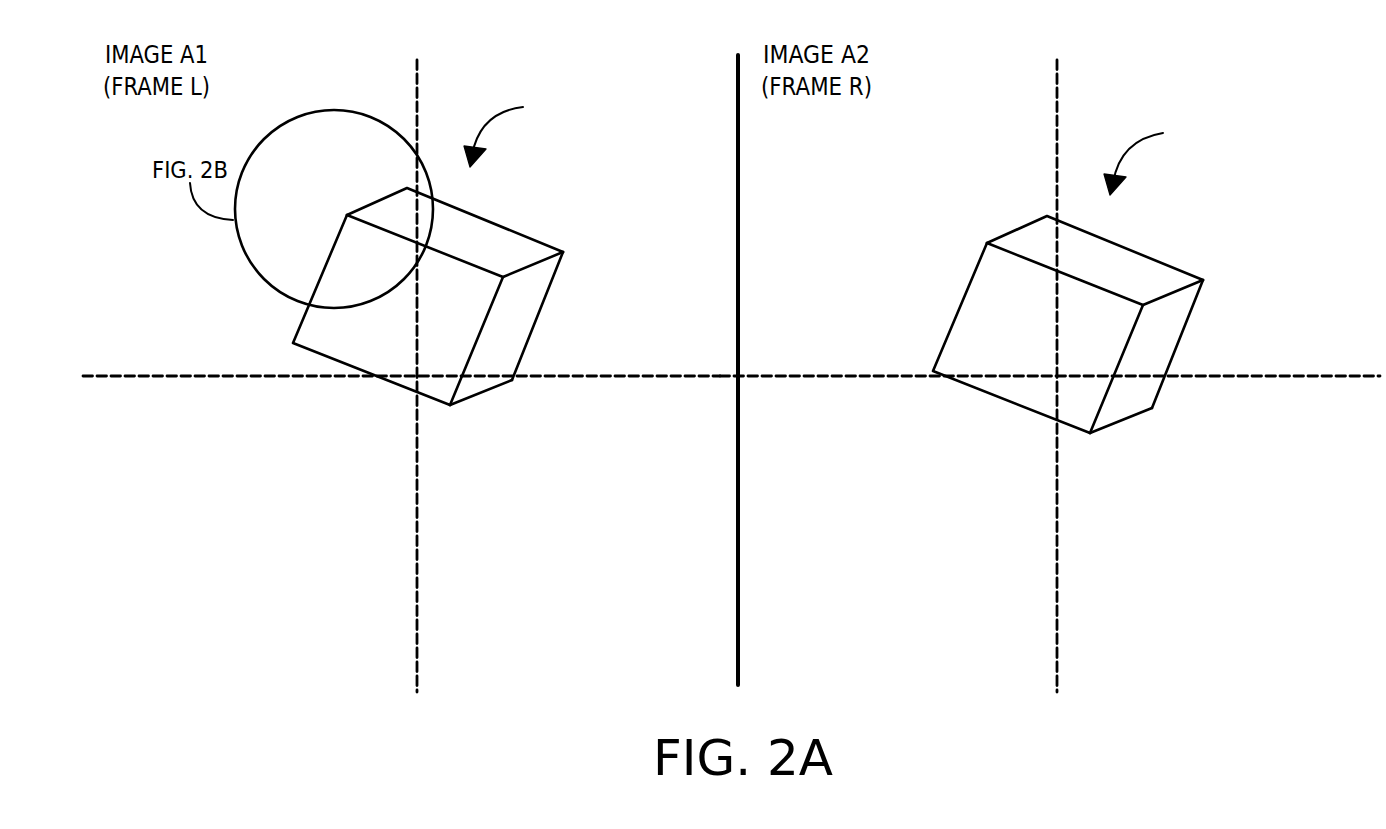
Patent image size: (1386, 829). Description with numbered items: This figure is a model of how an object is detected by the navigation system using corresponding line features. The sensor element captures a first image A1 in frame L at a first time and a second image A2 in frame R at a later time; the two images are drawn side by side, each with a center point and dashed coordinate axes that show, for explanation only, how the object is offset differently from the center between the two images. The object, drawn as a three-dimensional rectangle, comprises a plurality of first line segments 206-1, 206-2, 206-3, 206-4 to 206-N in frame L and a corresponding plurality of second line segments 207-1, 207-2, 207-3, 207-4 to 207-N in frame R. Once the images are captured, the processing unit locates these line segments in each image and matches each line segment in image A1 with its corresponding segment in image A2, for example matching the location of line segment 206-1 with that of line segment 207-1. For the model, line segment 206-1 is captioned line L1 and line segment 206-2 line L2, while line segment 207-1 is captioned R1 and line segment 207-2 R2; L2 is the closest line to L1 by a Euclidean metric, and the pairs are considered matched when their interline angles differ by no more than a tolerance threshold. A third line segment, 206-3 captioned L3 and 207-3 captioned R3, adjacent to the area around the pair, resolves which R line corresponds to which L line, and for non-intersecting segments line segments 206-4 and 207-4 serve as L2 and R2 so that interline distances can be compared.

The first line segment 206-1 is at (390, 193).
The first line segment 206-2 is at (320, 278).
The first line segment 206-3 is at (503, 223).
The first line segment 206-4 is at (498, 382).
The first line segment 206-N is at (533, 333).
The second line segment 207-1 is at (1027, 222).
The second line segment 207-2 is at (958, 302).
The second line segment 207-3 is at (1142, 250).
The second line segment 207-4 is at (1140, 413).
The second line segment 207-N is at (1173, 357).